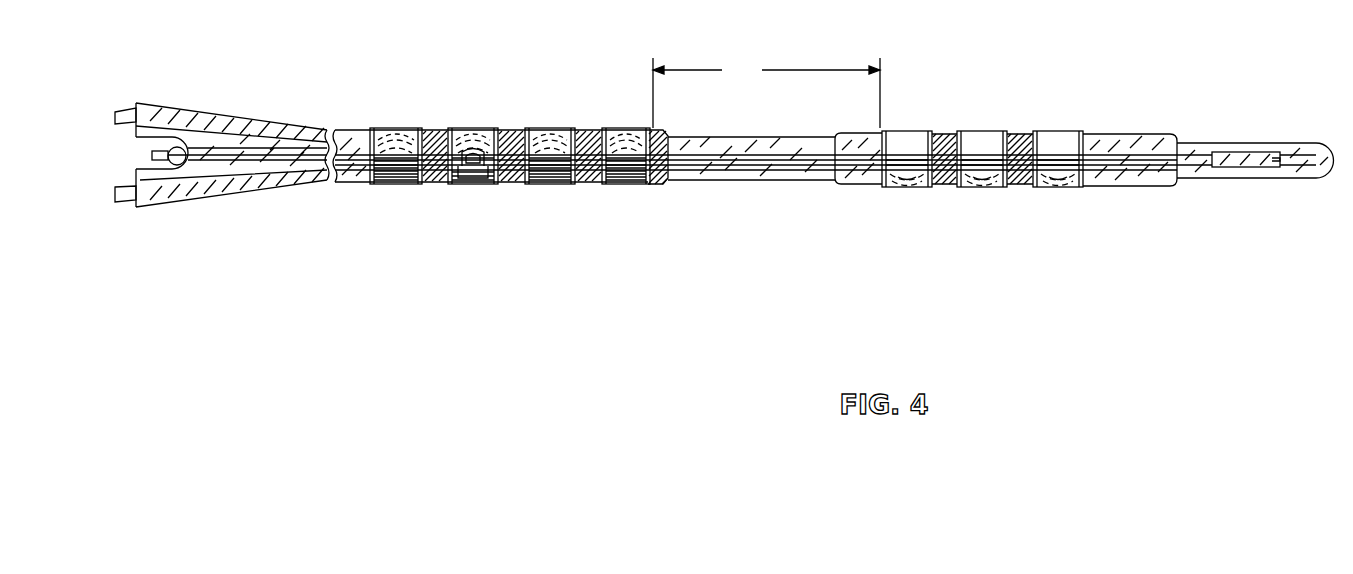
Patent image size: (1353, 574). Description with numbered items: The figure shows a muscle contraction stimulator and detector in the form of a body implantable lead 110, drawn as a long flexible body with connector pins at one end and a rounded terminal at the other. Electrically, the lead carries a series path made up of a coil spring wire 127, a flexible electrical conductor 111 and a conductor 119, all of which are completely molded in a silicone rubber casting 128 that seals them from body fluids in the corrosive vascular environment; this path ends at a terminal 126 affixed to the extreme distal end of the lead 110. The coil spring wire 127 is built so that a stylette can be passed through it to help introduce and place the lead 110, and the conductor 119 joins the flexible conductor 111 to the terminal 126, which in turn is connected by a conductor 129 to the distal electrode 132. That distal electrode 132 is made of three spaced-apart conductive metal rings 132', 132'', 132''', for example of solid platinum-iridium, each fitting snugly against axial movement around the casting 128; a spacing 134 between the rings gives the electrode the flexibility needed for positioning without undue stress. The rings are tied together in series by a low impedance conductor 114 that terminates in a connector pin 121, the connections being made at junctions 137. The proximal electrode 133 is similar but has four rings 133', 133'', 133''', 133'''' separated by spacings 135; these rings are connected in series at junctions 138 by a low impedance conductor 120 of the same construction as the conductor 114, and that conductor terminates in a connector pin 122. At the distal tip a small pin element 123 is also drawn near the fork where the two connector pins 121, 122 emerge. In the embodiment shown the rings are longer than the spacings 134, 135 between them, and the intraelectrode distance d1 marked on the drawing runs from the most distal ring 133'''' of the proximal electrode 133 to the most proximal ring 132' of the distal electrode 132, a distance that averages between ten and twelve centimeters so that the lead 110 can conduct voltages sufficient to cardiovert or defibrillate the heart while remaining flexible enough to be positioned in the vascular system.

The body implantable lead 110 is at (673, 406).
The flexible electrical conductor 111 is at (1270, 168).
The conductor 114 is at (198, 198).
The conductor 119 is at (1287, 151).
The low impedance conductor 120 is at (255, 128).
The connector pin 121 is at (124, 205).
The connector pin 122 is at (123, 108).
The electrode pin 123 is at (150, 155).
The terminal 126 is at (1320, 180).
The coil spring wire 127 is at (737, 163).
The silicone rubber casting 128 is at (797, 181).
The conductor 129 is at (1145, 187).
The distal electrode 132 is at (982, 105).
The conductive metal ring 132' is at (909, 191).
The conductive metal ring 132'' is at (986, 191).
The conductive metal ring 132''' is at (1063, 191).
The proximal electrode 133 is at (755, 104).
The conductive ring 133' is at (393, 188).
The conductive ring 133'' is at (473, 188).
The conductive ring 133''' is at (555, 188).
The conductive ring 133'''' is at (641, 188).
The spacing 134 is at (945, 133).
The spacing 135 is at (428, 128).
The junction 137 is at (910, 190).
The junction 138 is at (395, 130).